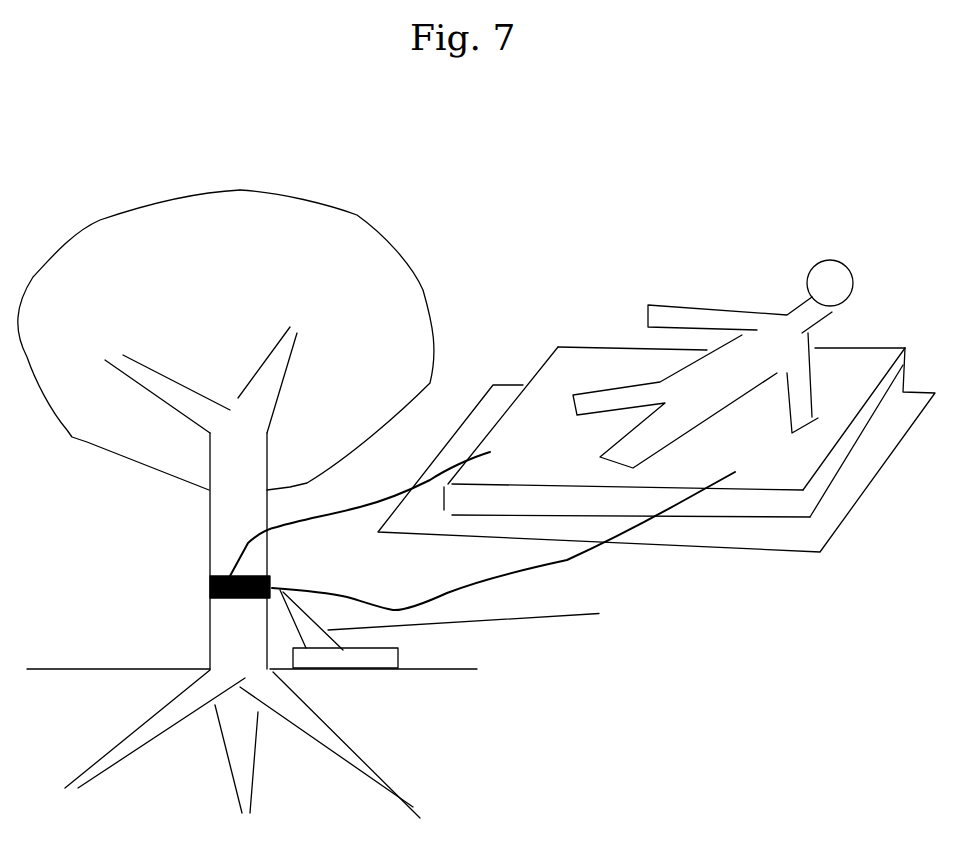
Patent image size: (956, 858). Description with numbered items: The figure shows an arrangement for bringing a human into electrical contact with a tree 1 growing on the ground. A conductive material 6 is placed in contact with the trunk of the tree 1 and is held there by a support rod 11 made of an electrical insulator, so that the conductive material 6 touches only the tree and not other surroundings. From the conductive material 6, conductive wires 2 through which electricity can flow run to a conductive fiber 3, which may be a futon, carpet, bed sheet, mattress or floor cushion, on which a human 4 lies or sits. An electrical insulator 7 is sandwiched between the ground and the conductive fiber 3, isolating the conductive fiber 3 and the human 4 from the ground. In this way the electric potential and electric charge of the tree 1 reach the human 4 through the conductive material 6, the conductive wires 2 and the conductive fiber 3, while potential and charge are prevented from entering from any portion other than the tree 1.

The tree 1 is at (362, 212).
The conductive wire 2 is at (343, 520).
The conductive fiber 3 is at (605, 347).
The human 4 is at (765, 305).
The conductive material 6 is at (198, 586).
The electrical insulator 7 is at (400, 662).
The support rod made of electrical insulator 11 is at (328, 603).